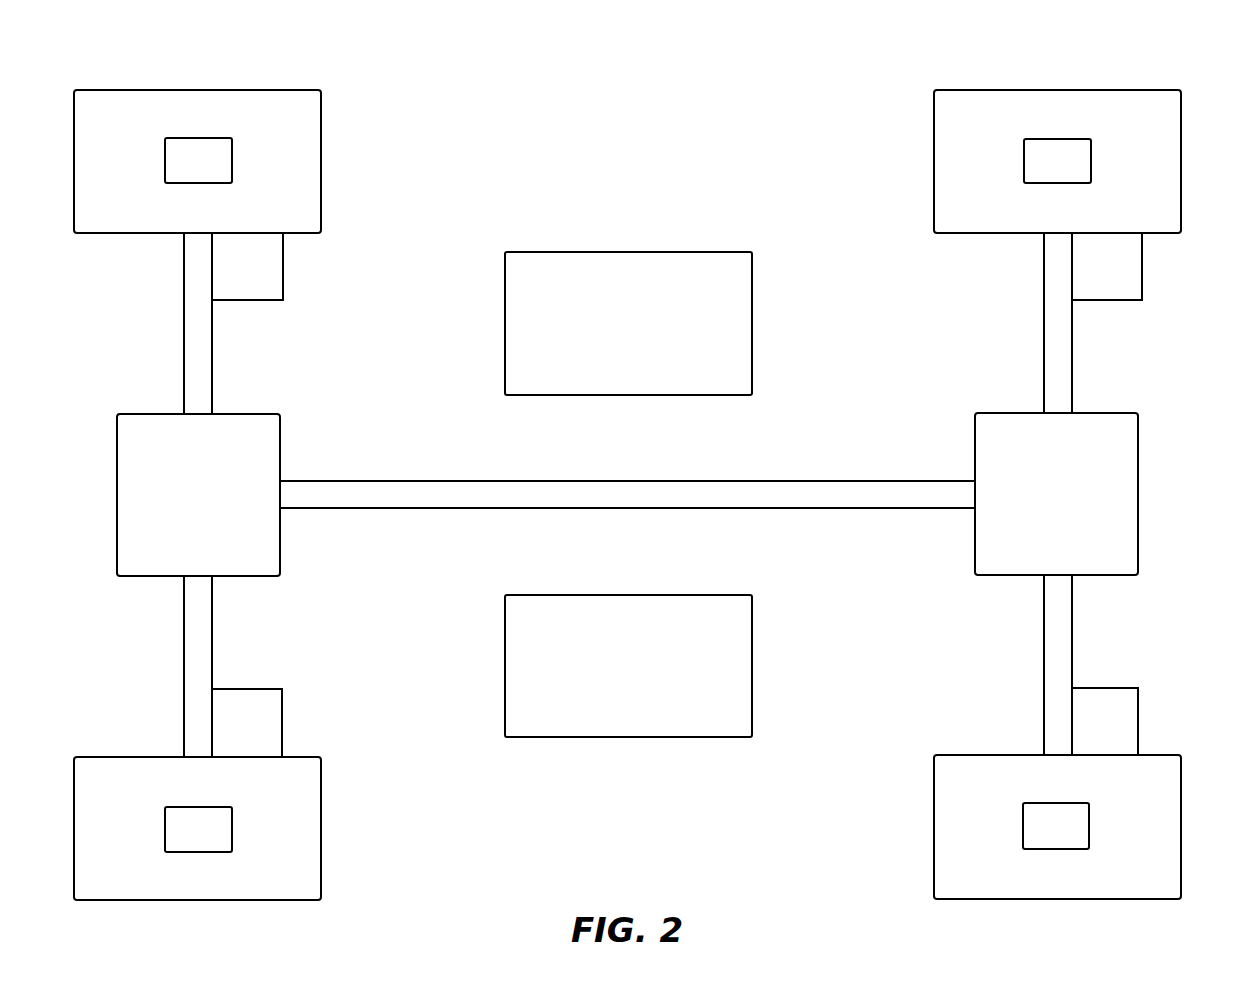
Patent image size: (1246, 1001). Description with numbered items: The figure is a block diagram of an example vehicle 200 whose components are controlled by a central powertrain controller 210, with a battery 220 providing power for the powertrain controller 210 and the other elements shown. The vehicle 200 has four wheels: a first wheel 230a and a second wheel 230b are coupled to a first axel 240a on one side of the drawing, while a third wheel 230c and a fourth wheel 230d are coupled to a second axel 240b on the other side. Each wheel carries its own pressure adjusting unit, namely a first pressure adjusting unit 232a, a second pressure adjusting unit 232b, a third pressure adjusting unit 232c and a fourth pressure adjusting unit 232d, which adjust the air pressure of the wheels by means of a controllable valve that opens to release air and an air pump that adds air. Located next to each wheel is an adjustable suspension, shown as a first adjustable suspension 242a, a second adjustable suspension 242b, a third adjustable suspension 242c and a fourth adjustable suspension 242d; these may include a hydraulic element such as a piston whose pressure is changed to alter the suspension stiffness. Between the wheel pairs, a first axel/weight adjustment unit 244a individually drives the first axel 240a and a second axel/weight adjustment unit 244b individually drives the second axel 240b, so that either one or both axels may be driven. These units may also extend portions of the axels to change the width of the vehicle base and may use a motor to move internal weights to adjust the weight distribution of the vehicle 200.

The vehicle 200 is at (1108, 73).
The powertrain controller 210 is at (611, 692).
The battery 220 is at (611, 350).
The first wheel 230a is at (174, 120).
The second wheel 230b is at (174, 789).
The third wheel 230c is at (1033, 785).
The fourth wheel 230d is at (1033, 120).
The first pressure adjusting unit 232a is at (175, 174).
The second pressure adjusting unit 232b is at (175, 842).
The third pressure adjusting unit 232c is at (1033, 841).
The fourth pressure adjusting unit 232d is at (1034, 174).
The first axel 240a is at (184, 325).
The second axel 240b is at (1044, 325).
The first adjustable suspension 242a is at (224, 280).
The second adjustable suspension 242b is at (224, 737).
The third adjustable suspension 242c is at (1082, 736).
The fourth adjustable suspension 242d is at (1083, 279).
The first axel/weight adjustment unit 244a is at (174, 508).
The second axel/weight adjustment unit 244b is at (1033, 507).